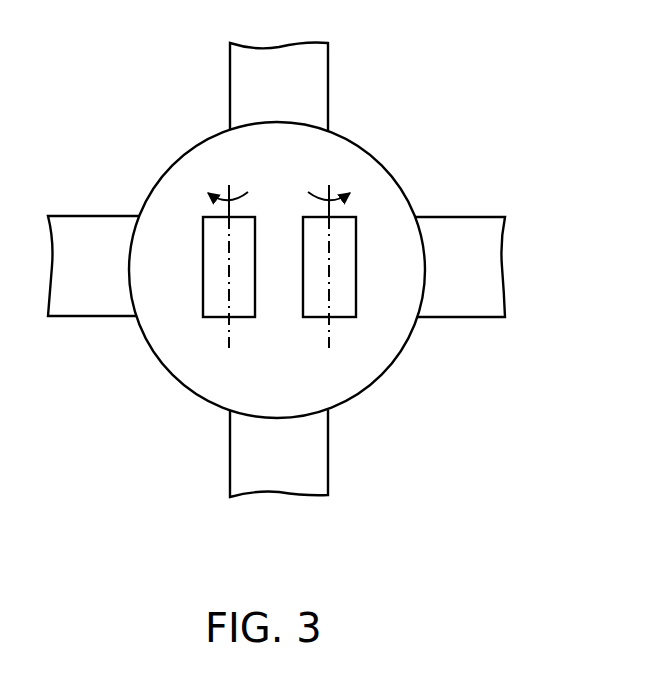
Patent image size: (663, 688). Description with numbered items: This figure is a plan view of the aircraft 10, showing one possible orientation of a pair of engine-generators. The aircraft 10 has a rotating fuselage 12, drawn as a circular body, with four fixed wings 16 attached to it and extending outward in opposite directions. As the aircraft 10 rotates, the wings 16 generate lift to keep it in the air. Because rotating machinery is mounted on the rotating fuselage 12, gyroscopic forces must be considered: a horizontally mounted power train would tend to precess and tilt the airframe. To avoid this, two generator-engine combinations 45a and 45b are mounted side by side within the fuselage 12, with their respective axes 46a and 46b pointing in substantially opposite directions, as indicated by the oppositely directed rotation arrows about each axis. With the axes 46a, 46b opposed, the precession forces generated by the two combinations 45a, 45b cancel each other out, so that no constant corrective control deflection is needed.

The aircraft 10 is at (114, 70).
The rotating fuselage 12 is at (378, 162).
The fixed wings 16 is at (329, 80).
The generator-engine combination 45a is at (203, 318).
The generator-engine combination 45b is at (357, 217).
The axis 46a is at (229, 185).
The axis 46b is at (329, 185).